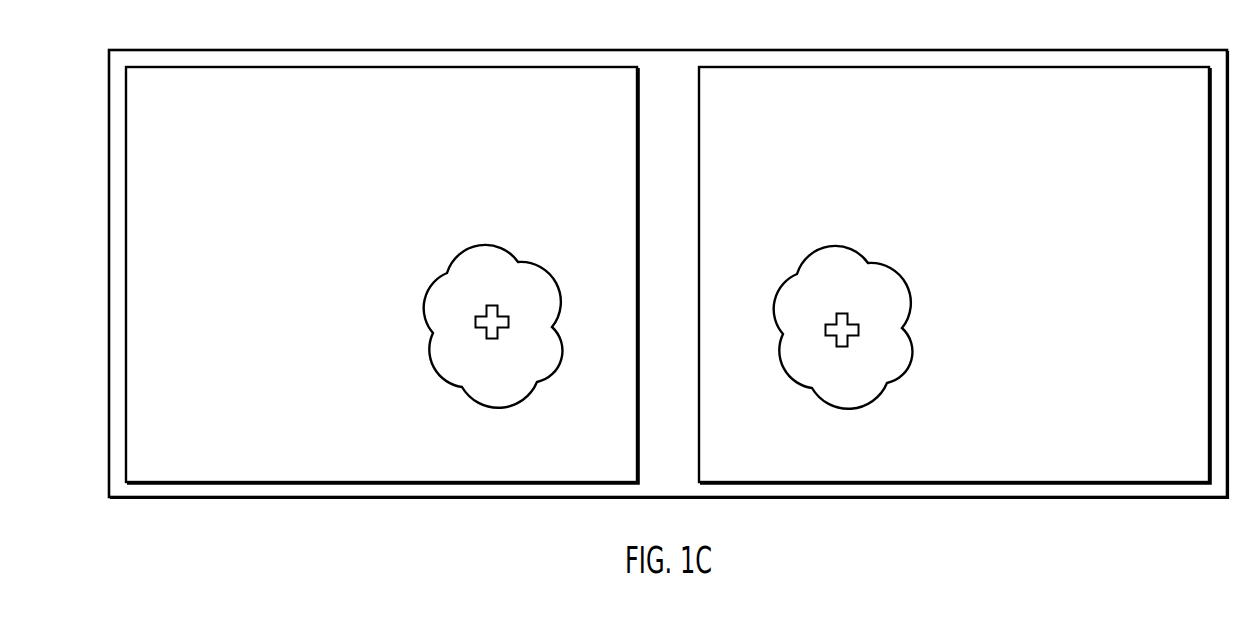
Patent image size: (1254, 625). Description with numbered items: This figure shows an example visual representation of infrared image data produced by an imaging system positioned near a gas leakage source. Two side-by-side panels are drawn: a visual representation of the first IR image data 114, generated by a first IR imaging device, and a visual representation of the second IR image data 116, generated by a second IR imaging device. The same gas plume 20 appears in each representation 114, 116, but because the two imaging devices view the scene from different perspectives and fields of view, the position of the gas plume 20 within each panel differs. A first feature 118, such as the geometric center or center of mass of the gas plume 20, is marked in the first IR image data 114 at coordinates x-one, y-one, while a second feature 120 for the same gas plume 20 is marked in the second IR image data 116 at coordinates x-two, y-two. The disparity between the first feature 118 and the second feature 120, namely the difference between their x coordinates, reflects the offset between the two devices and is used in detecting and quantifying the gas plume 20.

The first IR image data 114 is at (270, 67).
The second IR image data 116 is at (1062, 67).
The gas plume 20 is at (507, 248).
The first feature 118 is at (478, 334).
The second feature 120 is at (827, 342).